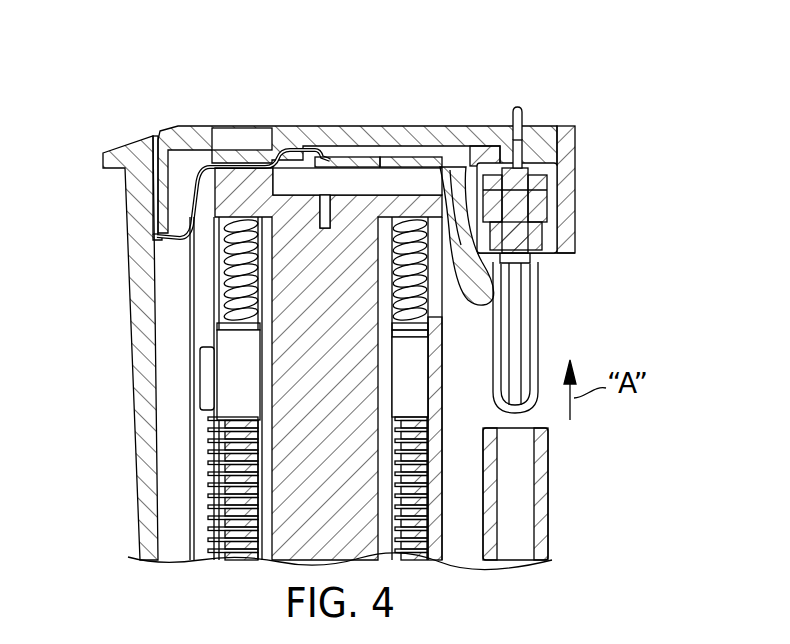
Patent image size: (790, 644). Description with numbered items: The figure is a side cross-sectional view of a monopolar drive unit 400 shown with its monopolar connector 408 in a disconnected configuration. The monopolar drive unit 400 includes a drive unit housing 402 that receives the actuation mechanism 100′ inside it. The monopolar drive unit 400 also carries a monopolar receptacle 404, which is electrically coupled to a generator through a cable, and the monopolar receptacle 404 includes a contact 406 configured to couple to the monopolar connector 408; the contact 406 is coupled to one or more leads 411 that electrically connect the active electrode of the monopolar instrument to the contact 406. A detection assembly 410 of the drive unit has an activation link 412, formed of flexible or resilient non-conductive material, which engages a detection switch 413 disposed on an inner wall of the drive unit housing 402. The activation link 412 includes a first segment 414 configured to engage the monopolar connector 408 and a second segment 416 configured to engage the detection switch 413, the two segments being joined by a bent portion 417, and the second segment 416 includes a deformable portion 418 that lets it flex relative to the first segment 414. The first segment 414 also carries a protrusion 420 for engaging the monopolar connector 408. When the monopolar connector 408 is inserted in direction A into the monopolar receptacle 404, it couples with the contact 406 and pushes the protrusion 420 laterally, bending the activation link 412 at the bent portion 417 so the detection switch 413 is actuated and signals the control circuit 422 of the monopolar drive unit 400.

The monopolar drive unit 400 is at (284, 118).
The drive unit housing 402 is at (124, 283).
The monopolar receptacle 404 is at (578, 197).
The contact 406 is at (545, 330).
The monopolar connector 408 is at (549, 478).
The detection assembly 410 is at (456, 148).
The leads 411 is at (522, 112).
The activation link 412 is at (482, 175).
The detection switch 413 is at (328, 152).
The first segment 414 is at (465, 177).
The second segment 416 is at (365, 163).
The bent portion 417 is at (504, 165).
The deformable portion 418 is at (408, 167).
The protrusion 420 is at (532, 272).
The control circuit 422 is at (157, 207).
The actuation mechanism 100′ is at (434, 473).